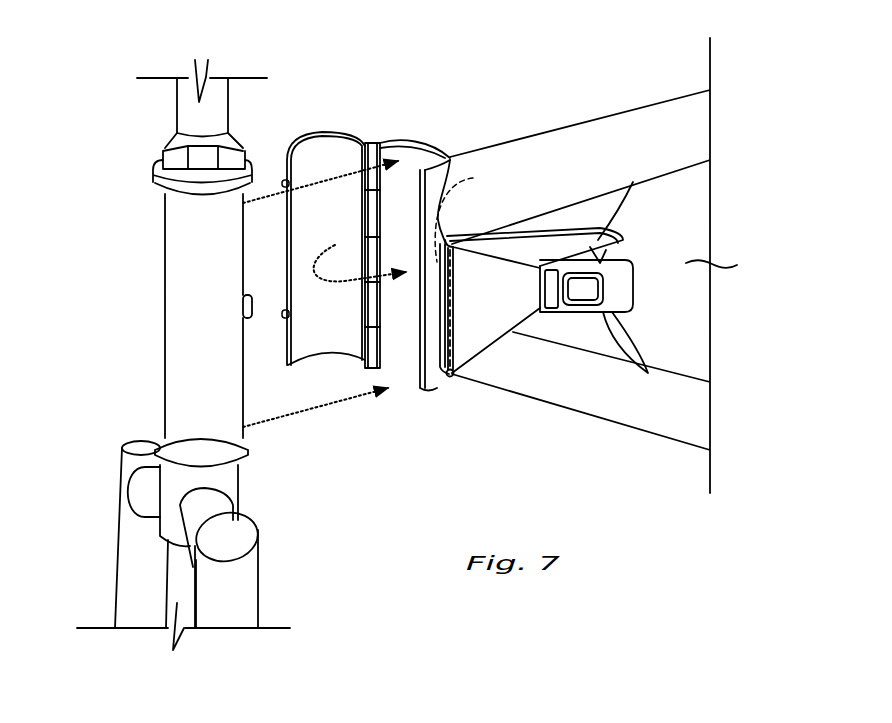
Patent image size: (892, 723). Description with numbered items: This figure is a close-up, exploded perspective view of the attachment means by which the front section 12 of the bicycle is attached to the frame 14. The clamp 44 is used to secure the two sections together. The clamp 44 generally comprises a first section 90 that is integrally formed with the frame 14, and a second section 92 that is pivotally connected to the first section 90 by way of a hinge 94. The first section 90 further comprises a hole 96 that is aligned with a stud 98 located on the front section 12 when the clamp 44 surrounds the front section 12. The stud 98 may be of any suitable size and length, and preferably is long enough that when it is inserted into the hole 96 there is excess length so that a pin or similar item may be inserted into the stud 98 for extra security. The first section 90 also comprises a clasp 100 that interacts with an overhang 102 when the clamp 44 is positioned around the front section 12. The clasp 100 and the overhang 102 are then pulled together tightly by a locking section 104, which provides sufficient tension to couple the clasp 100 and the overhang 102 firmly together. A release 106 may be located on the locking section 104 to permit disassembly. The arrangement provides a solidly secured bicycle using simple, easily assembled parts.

The front section 12 is at (110, 480).
The frame 14 is at (538, 113).
The clamp 44 is at (371, 280).
The first section 90 is at (427, 152).
The second section 92 is at (323, 132).
The hinge 94 is at (372, 143).
The hole 96 is at (467, 215).
The stud 98 is at (247, 317).
The clasp 100 is at (450, 374).
The overhang 102 is at (287, 247).
The locking section 104 is at (625, 278).
The release 106 is at (577, 293).